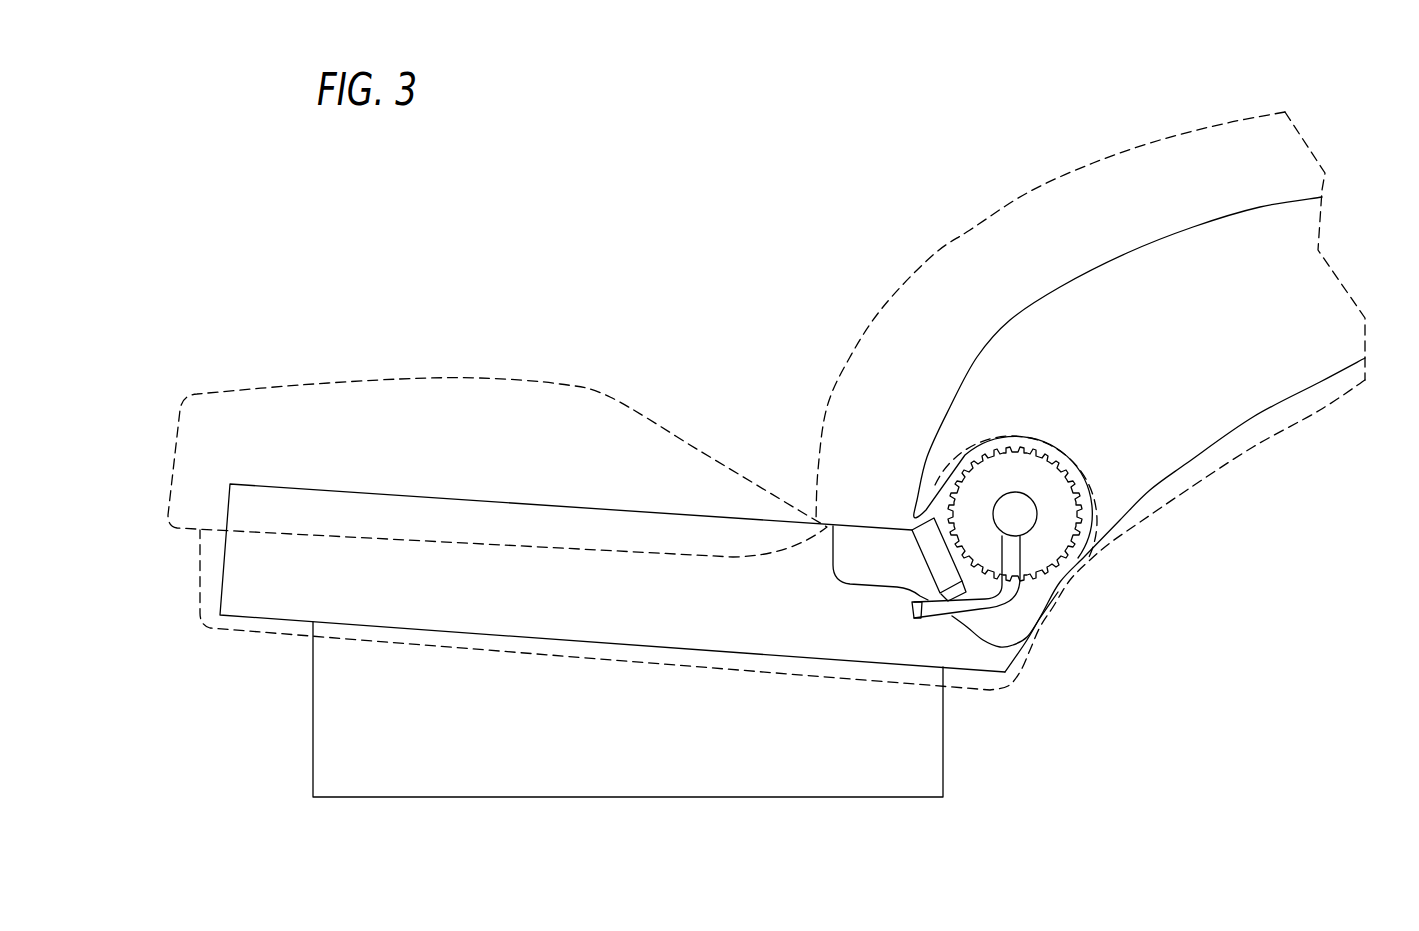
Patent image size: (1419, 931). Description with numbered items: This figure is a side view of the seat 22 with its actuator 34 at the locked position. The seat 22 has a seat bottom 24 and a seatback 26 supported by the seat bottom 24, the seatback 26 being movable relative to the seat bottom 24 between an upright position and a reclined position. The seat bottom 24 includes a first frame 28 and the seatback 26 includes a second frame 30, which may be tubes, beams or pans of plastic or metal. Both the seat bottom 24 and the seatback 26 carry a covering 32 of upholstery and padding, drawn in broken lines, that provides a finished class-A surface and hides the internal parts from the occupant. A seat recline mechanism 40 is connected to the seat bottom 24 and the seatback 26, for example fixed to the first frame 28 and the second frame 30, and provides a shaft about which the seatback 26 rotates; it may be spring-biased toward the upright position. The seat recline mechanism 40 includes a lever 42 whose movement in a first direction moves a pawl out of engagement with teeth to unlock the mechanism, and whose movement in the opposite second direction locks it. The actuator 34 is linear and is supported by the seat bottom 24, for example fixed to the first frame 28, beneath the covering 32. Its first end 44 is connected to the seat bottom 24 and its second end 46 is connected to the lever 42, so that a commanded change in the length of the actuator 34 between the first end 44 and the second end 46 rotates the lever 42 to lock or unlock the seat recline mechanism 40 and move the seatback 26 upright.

The seat 22 is at (711, 207).
The seat bottom 24 is at (467, 345).
The seatback 26 is at (975, 155).
The first frame 28 is at (338, 490).
The second frame 30 is at (1237, 387).
The covering 32 is at (847, 340).
The actuator 34 is at (922, 548).
The seat recline mechanism 40 is at (1018, 518).
The lever 42 is at (920, 612).
The first end 44 is at (912, 537).
The second end 46 is at (917, 597).